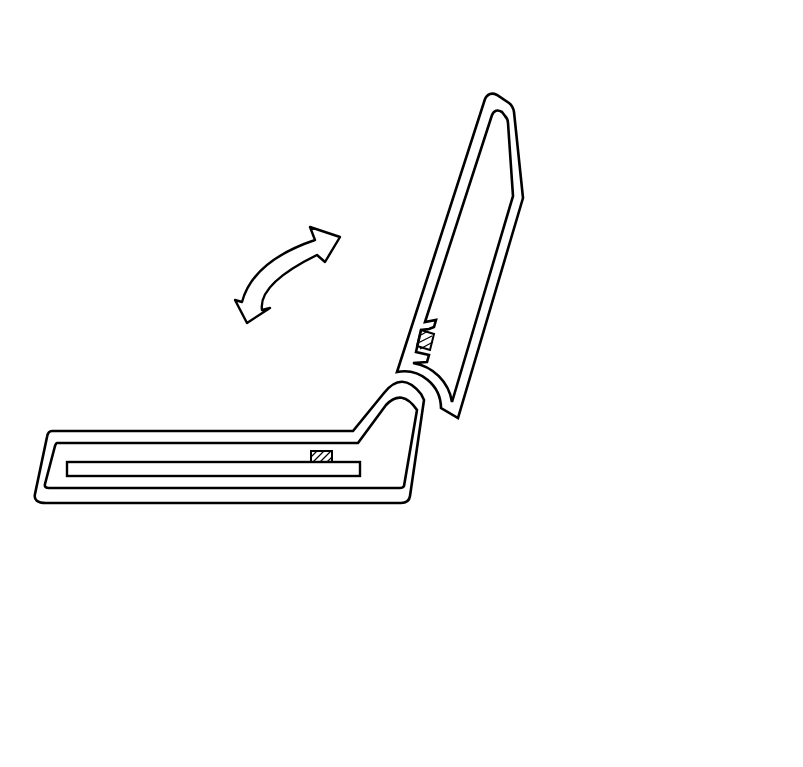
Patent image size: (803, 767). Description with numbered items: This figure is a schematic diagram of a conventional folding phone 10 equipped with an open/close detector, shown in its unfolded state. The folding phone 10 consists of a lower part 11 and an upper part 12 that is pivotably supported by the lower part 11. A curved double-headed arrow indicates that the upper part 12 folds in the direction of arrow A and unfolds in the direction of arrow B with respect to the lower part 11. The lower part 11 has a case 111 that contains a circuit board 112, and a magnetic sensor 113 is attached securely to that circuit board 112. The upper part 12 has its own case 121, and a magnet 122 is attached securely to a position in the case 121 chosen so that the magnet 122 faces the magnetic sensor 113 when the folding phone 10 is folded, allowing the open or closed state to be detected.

The folding phone 10 is at (584, 78).
The lower part 11 is at (123, 393).
The case 111 is at (160, 431).
The circuit board 112 is at (214, 462).
The magnetic sensor 113 is at (322, 450).
The upper part 12 is at (404, 168).
The case 121 is at (473, 128).
The magnet 122 is at (433, 340).